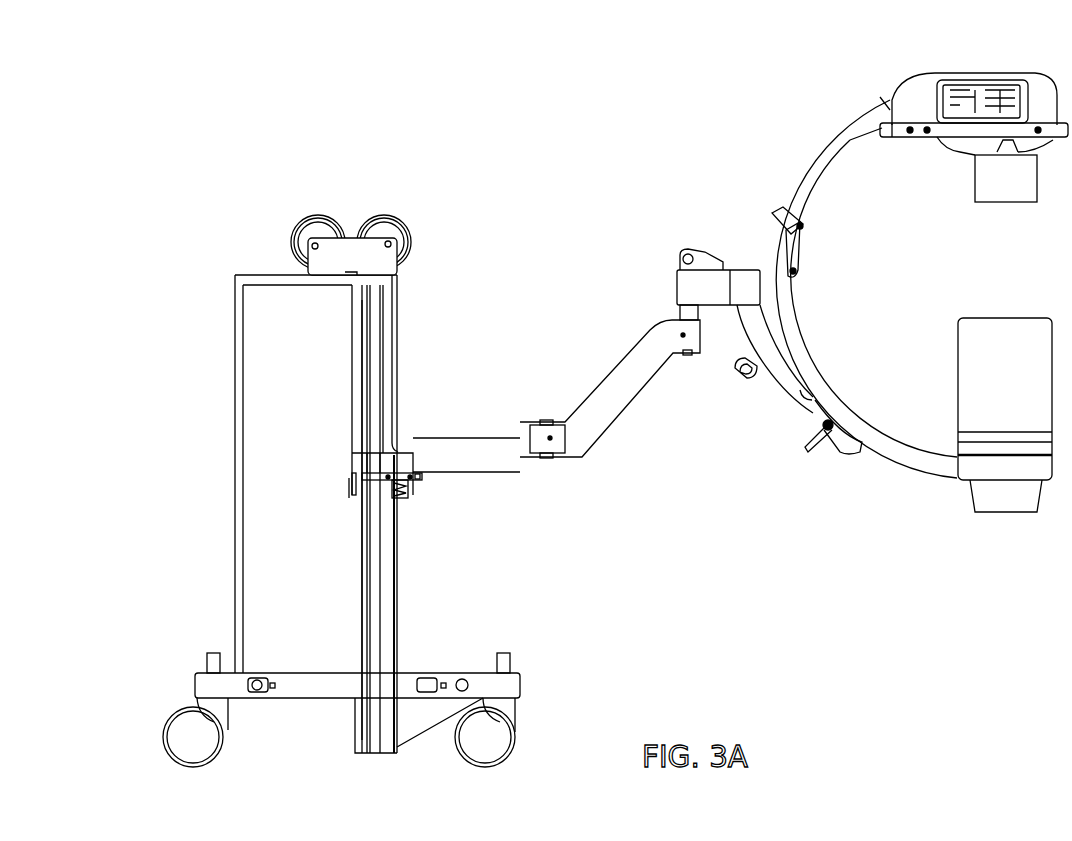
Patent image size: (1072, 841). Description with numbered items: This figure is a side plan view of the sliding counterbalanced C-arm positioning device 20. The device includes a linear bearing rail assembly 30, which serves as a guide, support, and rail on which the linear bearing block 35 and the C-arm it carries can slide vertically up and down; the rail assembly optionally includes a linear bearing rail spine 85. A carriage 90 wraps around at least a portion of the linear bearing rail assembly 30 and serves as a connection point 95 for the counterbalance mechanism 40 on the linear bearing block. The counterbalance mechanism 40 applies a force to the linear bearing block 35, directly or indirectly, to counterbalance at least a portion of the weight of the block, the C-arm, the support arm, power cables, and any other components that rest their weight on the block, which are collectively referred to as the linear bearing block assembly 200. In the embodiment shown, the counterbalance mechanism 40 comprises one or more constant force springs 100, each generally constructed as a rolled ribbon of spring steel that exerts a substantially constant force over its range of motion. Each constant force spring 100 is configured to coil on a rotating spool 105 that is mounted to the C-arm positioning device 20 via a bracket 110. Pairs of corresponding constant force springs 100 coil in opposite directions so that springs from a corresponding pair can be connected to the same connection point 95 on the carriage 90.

The C-arm positioning device 20 is at (569, 230).
The linear bearing rail assembly 30 is at (403, 598).
The linear bearing block 35 is at (415, 440).
The counterbalance mechanism 40 is at (395, 216).
The linear bearing rail spine 85 is at (362, 600).
The carriage 90 is at (352, 470).
The connection point 95 is at (348, 485).
The constant force springs 100 is at (342, 230).
The rotating spool 105 is at (412, 238).
The bracket 110 is at (331, 264).
The linear bearing block assembly 200 is at (613, 384).